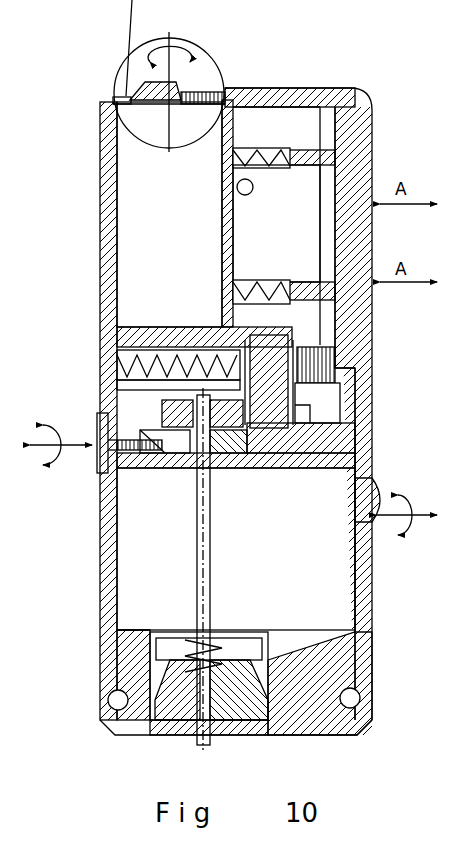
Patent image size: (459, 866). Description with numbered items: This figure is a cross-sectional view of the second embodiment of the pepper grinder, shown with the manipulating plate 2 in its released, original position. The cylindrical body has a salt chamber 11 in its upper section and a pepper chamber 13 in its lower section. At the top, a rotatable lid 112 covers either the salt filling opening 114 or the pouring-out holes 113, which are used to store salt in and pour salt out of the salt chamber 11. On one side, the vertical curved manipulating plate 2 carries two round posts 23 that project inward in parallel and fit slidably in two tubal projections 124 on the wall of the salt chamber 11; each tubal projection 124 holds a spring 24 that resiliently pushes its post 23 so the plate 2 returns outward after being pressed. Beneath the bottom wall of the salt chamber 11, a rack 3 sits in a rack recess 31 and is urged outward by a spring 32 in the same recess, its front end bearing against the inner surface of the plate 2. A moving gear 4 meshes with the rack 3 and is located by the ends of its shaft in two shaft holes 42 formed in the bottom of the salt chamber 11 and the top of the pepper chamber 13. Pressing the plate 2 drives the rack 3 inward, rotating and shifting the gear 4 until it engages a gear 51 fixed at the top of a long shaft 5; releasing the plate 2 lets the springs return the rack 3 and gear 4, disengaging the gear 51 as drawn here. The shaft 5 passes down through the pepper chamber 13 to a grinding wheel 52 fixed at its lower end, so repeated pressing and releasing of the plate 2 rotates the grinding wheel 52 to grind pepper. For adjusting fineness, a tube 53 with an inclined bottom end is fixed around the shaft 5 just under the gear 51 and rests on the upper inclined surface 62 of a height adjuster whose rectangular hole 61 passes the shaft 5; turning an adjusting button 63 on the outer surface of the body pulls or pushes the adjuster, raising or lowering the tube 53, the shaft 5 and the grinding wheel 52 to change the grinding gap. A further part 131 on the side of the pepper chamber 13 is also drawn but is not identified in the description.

The manipulating plate 2 is at (372, 165).
The rack 3 is at (340, 410).
The moving gear 4 is at (320, 465).
The long shaft 5 is at (208, 556).
The salt chamber 11 is at (132, 195).
The pepper chamber 13 is at (160, 585).
The round posts 23 is at (302, 157).
The spring 24 is at (272, 172).
The rack recess 31 is at (117, 368).
The spring 32 is at (120, 388).
The shaft holes 42 is at (250, 345).
The gear 51 is at (172, 412).
The grinding wheel 52 is at (175, 710).
The tube 53 is at (270, 462).
The rectangular hole 61 is at (185, 468).
The upper inclined surface 62 is at (230, 468).
The adjusting button 63 is at (97, 468).
The rotatable lid 112 is at (130, 88).
The pouring-out holes 113 is at (198, 100).
The salt filling opening 114 is at (116, 98).
The tubal projections 124 is at (265, 150).
The plug 131 is at (368, 540).